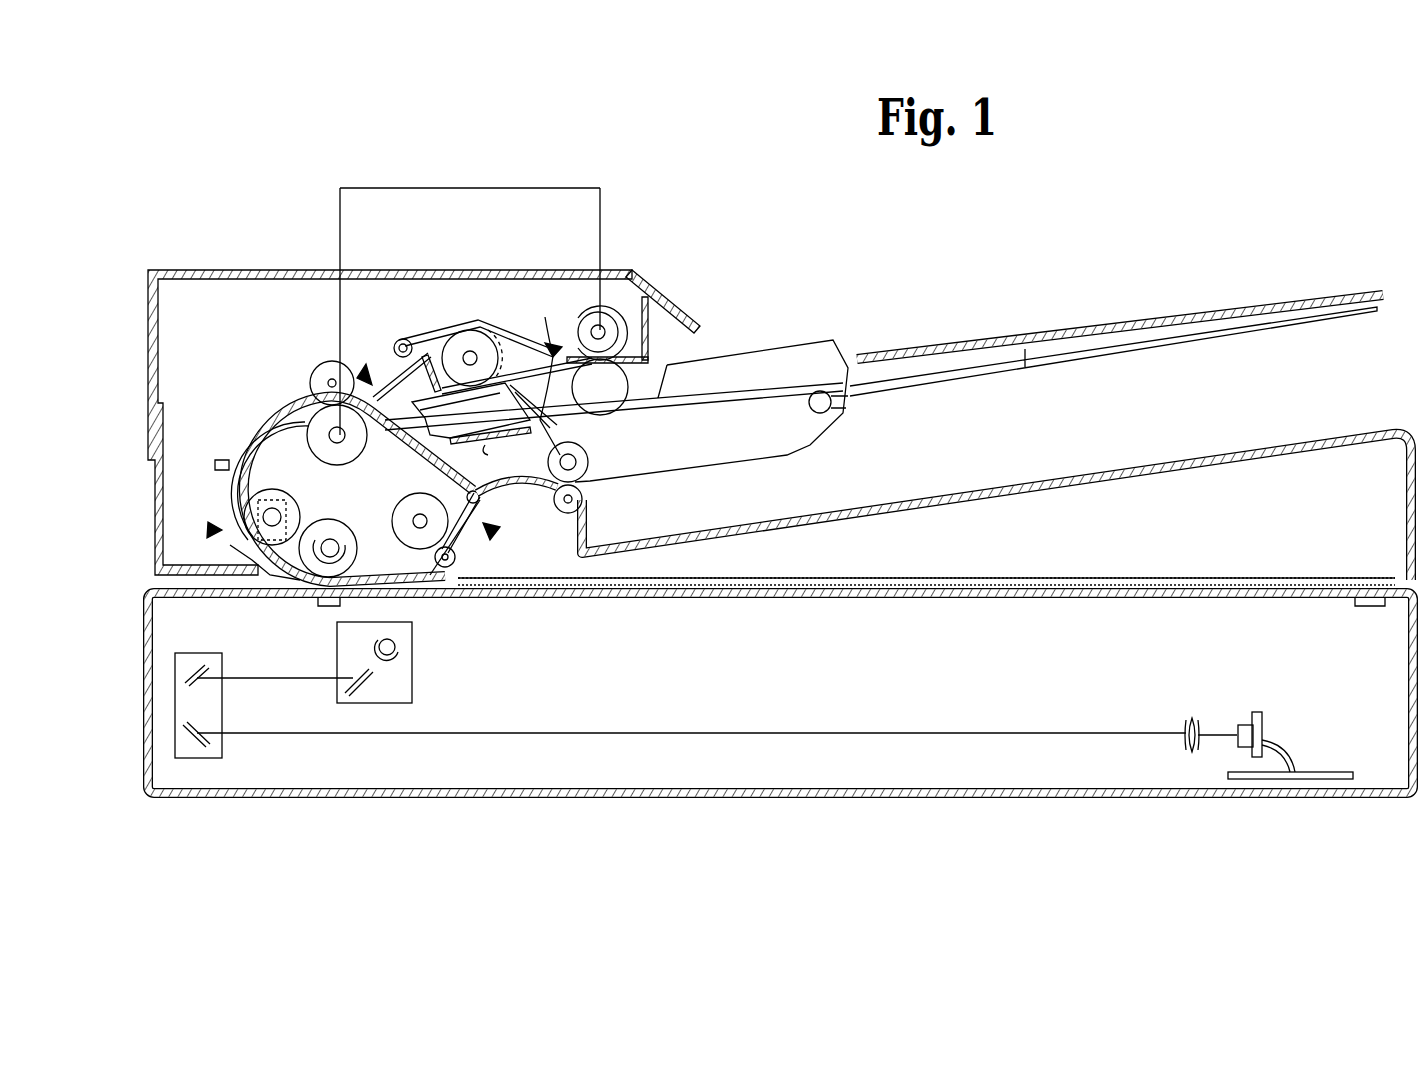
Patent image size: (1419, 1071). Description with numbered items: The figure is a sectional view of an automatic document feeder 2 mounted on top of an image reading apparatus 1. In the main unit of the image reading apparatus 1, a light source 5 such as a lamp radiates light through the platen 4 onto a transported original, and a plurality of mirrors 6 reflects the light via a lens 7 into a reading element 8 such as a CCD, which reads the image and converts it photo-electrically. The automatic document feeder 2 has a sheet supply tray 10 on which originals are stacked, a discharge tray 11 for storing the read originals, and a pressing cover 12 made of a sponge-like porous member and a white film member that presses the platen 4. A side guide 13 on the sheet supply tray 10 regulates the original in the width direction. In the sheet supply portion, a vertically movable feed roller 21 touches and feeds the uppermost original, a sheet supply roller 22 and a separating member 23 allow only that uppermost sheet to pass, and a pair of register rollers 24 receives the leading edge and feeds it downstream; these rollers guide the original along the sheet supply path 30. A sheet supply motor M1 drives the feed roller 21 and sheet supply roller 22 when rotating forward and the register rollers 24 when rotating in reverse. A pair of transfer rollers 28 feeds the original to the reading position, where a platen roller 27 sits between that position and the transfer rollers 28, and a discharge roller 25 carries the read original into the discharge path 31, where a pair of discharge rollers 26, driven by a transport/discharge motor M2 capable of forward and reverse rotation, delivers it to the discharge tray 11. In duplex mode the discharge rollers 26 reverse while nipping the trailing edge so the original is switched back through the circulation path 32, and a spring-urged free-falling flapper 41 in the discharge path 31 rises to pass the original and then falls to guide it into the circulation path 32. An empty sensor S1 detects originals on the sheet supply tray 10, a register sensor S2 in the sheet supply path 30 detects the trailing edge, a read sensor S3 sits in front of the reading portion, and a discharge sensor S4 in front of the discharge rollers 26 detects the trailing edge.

The image reading apparatus 1 is at (737, 190).
The automatic document feeder 2 is at (137, 355).
The platen 4 is at (905, 597).
The light source 5 is at (393, 647).
The mirrors 6 is at (195, 740).
The lens 7 is at (1190, 720).
The reading element 8 is at (1262, 720).
The sheet supply tray 10 is at (1092, 330).
The discharge tray 11 is at (1000, 488).
The pressing cover 12 is at (1192, 578).
The side guide 13 is at (762, 360).
The feed roller 21 is at (618, 312).
The sheet supply roller 22 is at (493, 322).
The separating member 23 is at (442, 323).
The pair of register rollers 24 is at (325, 370).
The pair of discharge rollers 25 is at (397, 523).
The pair of discharge rollers 26 is at (590, 459).
The platen roller 27 is at (303, 570).
The pair of transfer rollers 28 is at (273, 497).
The sheet supply path 30 is at (287, 397).
The discharge path 31 is at (472, 523).
The circulation path 32 is at (432, 453).
The free-falling flapper 41 is at (500, 498).
The sheet supply motor M1 is at (470, 358).
The transport/discharge motor M2 is at (415, 521).
The empty sensor S1 is at (545, 317).
The register sensor S2 is at (372, 385).
The read sensor S3 is at (215, 531).
The discharge sensor S4 is at (490, 528).